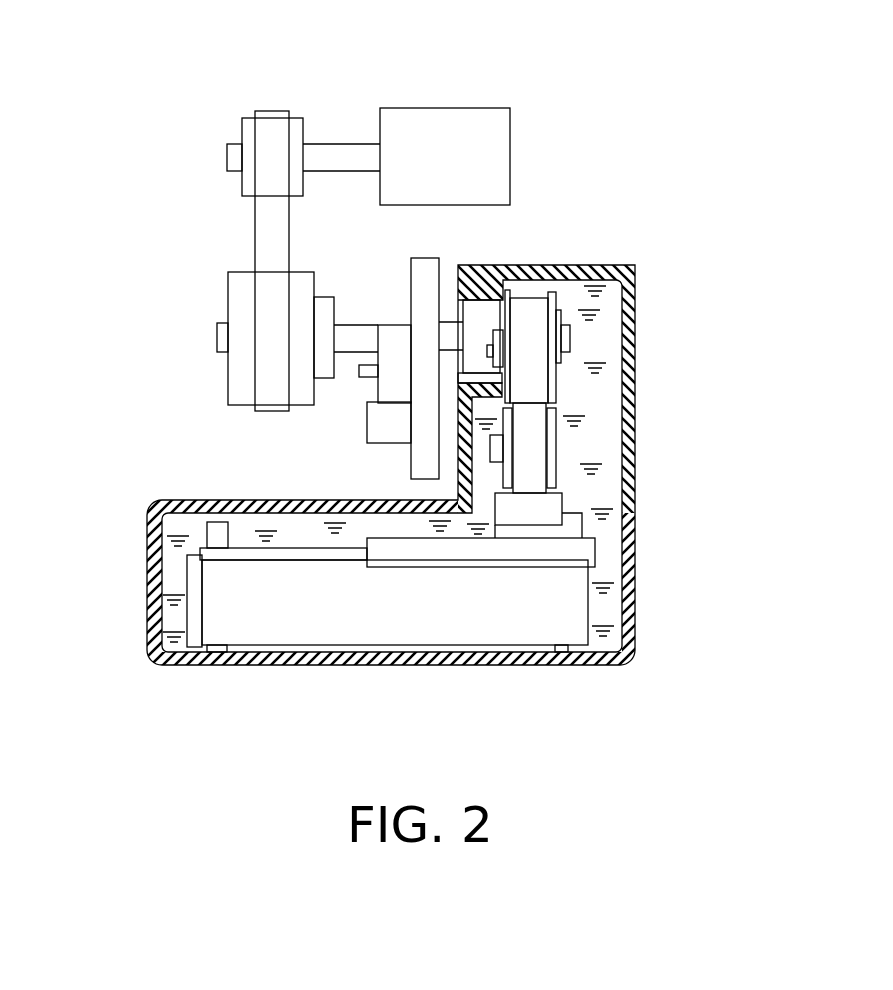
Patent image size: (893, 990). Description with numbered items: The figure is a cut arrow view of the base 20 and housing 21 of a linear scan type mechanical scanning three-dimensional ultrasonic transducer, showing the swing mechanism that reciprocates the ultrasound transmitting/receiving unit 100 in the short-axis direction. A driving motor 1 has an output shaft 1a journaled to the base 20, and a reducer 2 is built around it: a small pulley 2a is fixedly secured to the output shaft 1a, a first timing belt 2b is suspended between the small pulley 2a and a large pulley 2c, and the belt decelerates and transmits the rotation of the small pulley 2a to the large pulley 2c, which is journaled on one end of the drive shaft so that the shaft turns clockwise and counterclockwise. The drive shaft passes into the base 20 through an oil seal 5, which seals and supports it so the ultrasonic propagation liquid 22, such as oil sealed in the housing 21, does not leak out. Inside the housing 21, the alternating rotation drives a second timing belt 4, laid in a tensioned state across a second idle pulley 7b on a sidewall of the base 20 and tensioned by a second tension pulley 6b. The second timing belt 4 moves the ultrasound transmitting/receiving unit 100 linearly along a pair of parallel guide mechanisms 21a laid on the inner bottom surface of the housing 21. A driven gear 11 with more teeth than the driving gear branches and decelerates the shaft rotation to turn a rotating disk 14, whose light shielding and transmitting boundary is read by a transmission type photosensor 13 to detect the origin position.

The driving motor 1 is at (470, 133).
The output shaft 1a is at (338, 155).
The reducer 2 is at (249, 251).
The small pulley 2a is at (245, 138).
The first timing belt 2b is at (272, 249).
The large pulley 2c is at (237, 358).
The second timing belt 4 is at (532, 481).
The oil seal 5 is at (483, 315).
The second tension pulley 6b is at (528, 307).
The second idle pulley 7b is at (557, 452).
The driven gear 11 is at (427, 265).
The transmission type photosensor 13 is at (390, 433).
The rotating disk 14 is at (397, 332).
The base 20 is at (150, 505).
The housing 21 is at (166, 668).
The guide mechanisms 21a is at (205, 668).
The ultrasonic propagation liquid 22 is at (172, 585).
The ultrasound transmitting/receiving unit 100 is at (430, 610).